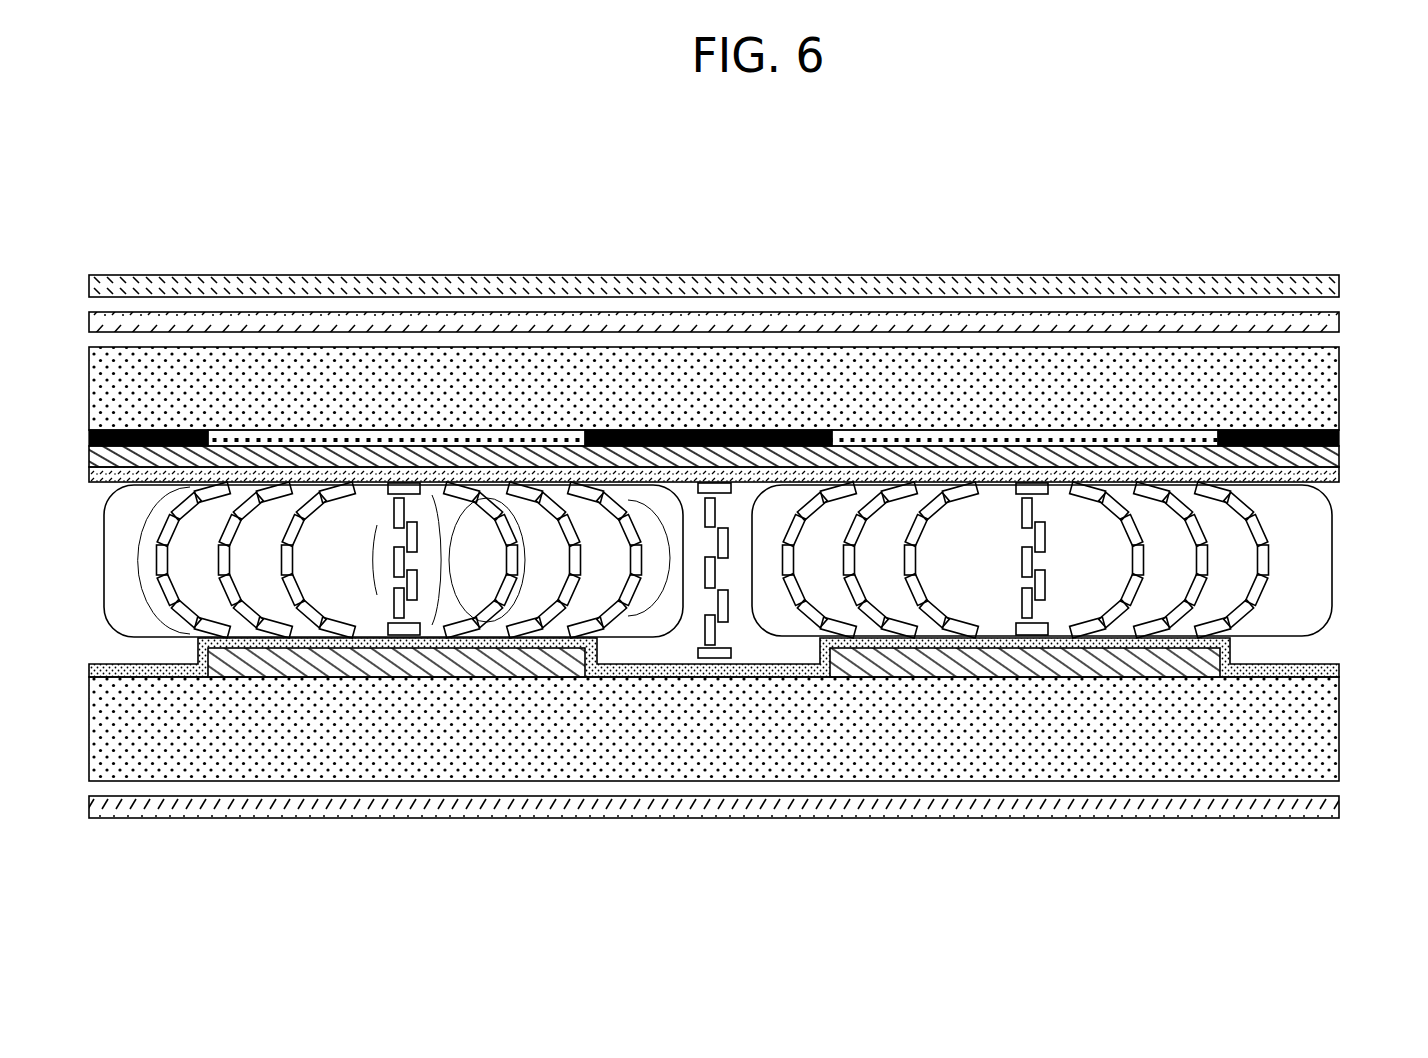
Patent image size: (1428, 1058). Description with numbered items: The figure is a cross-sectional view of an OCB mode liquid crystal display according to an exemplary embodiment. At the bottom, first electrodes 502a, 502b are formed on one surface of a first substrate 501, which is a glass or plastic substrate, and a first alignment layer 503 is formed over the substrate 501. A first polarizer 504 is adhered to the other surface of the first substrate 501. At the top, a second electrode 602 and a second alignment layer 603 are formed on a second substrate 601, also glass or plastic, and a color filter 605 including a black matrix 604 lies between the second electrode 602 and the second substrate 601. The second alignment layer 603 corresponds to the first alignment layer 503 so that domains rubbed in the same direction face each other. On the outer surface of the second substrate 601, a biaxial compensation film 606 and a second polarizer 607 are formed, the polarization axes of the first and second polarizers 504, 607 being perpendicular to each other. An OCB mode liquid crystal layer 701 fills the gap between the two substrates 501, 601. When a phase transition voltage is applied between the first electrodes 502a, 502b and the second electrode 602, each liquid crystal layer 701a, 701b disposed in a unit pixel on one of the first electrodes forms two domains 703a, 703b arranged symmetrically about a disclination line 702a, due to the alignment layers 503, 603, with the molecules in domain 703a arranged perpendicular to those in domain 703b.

The first substrate 501 is at (1333, 730).
The first electrode 502a is at (405, 650).
The first electrode 502b is at (1027, 650).
The first alignment layer 503 is at (1333, 668).
The first polarizer 504 is at (1333, 805).
The second substrate 601 is at (1333, 384).
The second electrode 602 is at (1333, 456).
The second alignment layer 603 is at (1339, 477).
The black matrix 604 is at (685, 440).
The color filter 605 is at (1013, 440).
The biaxial compensation film 606 is at (1339, 321).
The second polarizer 607 is at (1339, 286).
The OCB mode liquid crystal layer 701 is at (764, 549).
The liquid crystal layer 701a is at (393, 549).
The liquid crystal layer 701b is at (790, 637).
The disclination line 702a is at (430, 505).
The domain 703a is at (305, 500).
The domain 703b is at (497, 500).